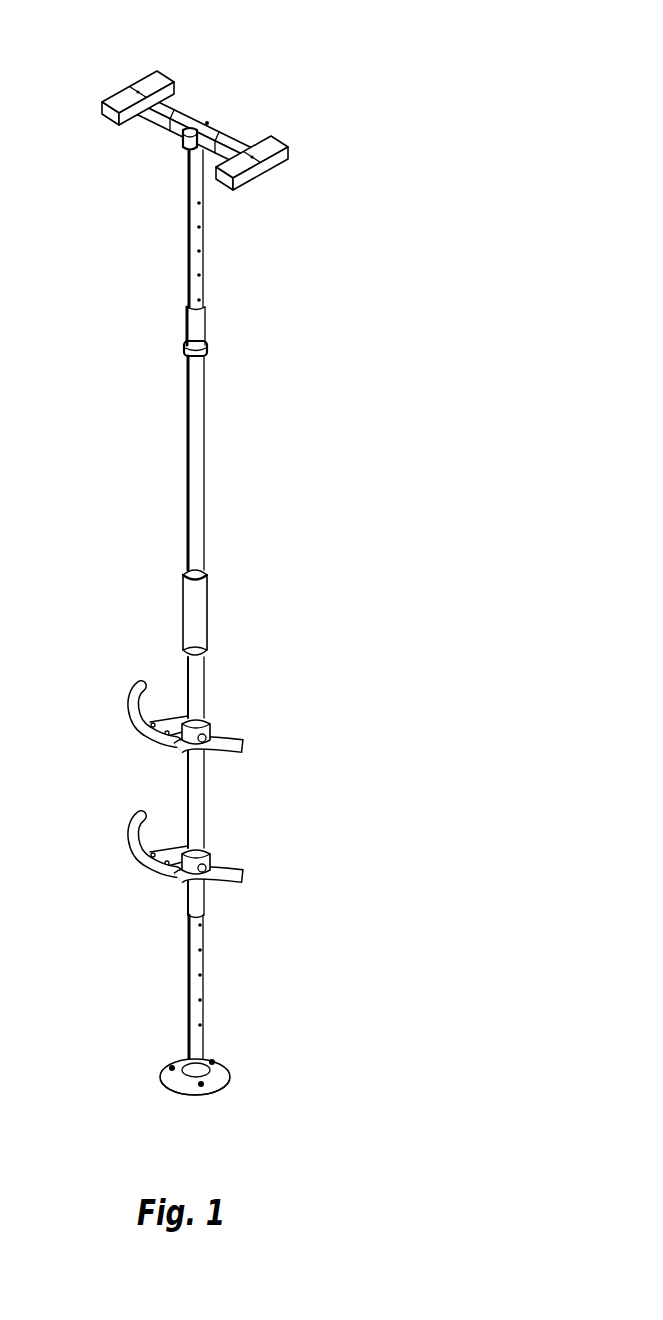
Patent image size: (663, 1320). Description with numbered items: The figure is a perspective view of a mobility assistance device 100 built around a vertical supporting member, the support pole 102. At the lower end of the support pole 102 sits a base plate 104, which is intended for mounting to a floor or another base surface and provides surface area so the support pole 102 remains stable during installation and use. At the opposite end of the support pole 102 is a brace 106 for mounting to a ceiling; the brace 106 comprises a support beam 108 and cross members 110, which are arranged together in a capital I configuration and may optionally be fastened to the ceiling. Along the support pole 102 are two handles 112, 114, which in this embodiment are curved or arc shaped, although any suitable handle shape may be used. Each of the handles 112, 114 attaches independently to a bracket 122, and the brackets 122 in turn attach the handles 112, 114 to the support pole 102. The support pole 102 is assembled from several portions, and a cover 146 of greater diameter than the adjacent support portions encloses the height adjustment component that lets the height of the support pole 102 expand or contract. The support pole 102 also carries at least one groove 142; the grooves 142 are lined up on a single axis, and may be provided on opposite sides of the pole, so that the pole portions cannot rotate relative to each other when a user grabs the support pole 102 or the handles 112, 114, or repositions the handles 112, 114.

The mobility assistance device 100 is at (366, 166).
The support pole 102 is at (203, 453).
The base plate 104 is at (230, 1073).
The brace 106 is at (278, 70).
The support beam 108 is at (175, 100).
The cross members 110 is at (167, 71).
The handle 112 is at (242, 740).
The handle 114 is at (243, 877).
The brackets 122 is at (207, 713).
The groove 142 is at (187, 213).
The cover 146 is at (205, 603).